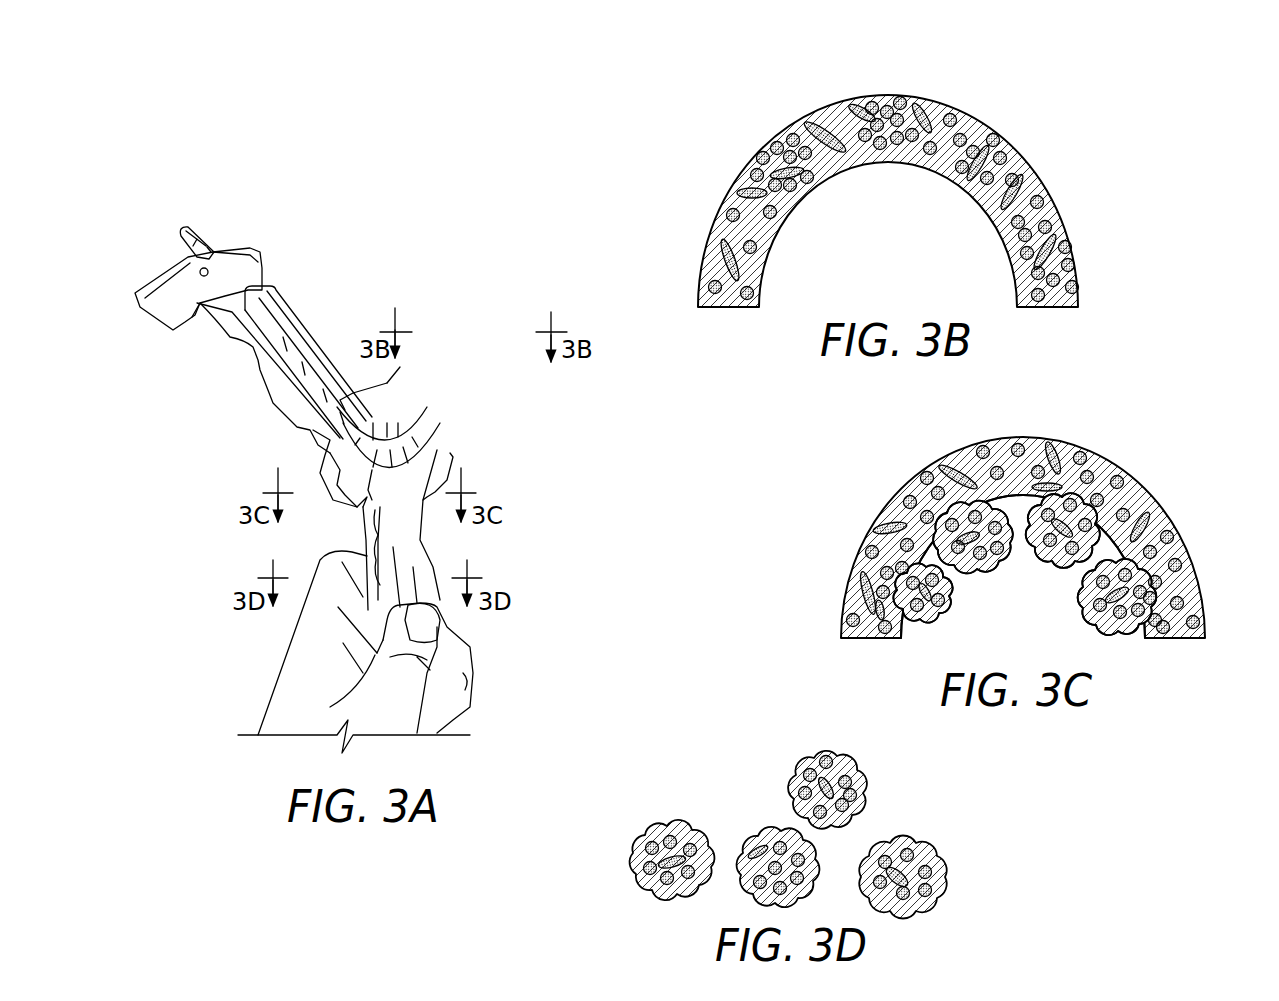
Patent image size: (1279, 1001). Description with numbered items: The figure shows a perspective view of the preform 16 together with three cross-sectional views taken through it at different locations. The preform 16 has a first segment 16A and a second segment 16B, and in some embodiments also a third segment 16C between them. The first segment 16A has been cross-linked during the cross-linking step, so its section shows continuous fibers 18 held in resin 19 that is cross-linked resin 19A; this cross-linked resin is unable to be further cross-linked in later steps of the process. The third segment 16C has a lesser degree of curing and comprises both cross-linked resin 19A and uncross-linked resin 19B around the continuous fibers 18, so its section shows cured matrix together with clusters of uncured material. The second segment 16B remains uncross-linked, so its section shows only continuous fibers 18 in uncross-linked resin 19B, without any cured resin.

In FIG. 3A, the preform 16 is at (206, 180).
In FIG. 3A, the first segment 16A is at (128, 312).
In FIG. 3B, the first segment 16A is at (730, 160).
In FIG. 3A, the second segment 16B is at (442, 562).
In FIG. 3D, the second segment 16B is at (700, 818).
In FIG. 3A, the third segment 16C is at (303, 453).
In FIG. 3C, the third segment 16C is at (862, 512).
In FIG. 3B, the continuous fibers 18 is at (906, 125).
In FIG. 3C, the continuous fibers 18 is at (1122, 484).
In FIG. 3D, the continuous fibers 18 is at (635, 875).
In FIG. 3B, the resin 19 is at (822, 112).
In FIG. 3C, the resin 19 is at (962, 462).
In FIG. 3C, the cross-linked resin 19A is at (1173, 548).
In FIG. 3C, the uncross-linked resin 19B is at (1133, 640).
In FIG. 3D, the uncross-linked resin 19B is at (926, 828).